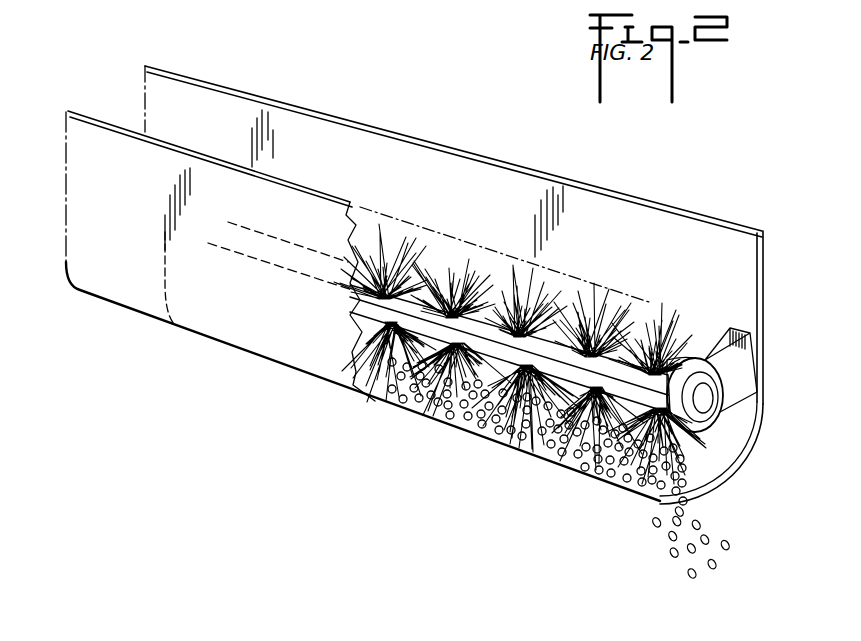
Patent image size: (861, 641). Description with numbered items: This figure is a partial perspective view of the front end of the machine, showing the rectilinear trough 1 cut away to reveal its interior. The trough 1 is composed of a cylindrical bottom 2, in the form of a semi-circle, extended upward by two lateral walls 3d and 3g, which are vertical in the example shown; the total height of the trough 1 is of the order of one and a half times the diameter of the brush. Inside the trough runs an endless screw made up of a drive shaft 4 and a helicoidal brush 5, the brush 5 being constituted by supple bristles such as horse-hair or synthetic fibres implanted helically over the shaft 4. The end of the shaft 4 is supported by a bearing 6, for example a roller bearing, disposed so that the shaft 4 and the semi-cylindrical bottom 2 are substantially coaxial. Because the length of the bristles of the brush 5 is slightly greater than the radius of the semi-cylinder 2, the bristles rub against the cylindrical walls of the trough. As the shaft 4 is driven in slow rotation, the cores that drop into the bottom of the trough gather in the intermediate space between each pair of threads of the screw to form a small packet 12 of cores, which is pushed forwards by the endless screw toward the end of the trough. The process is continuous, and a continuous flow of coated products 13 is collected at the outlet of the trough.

The rectilinear trough 1 is at (600, 186).
The cylindrical bottom 2 is at (766, 409).
The lateral wall 3d is at (220, 290).
The lateral wall 3g is at (766, 288).
The drive shaft 4 is at (367, 293).
The helicoidal brush 5 is at (503, 265).
The bearings 6 is at (688, 432).
The packet of cores 12 is at (587, 477).
The coated products 13 is at (703, 515).